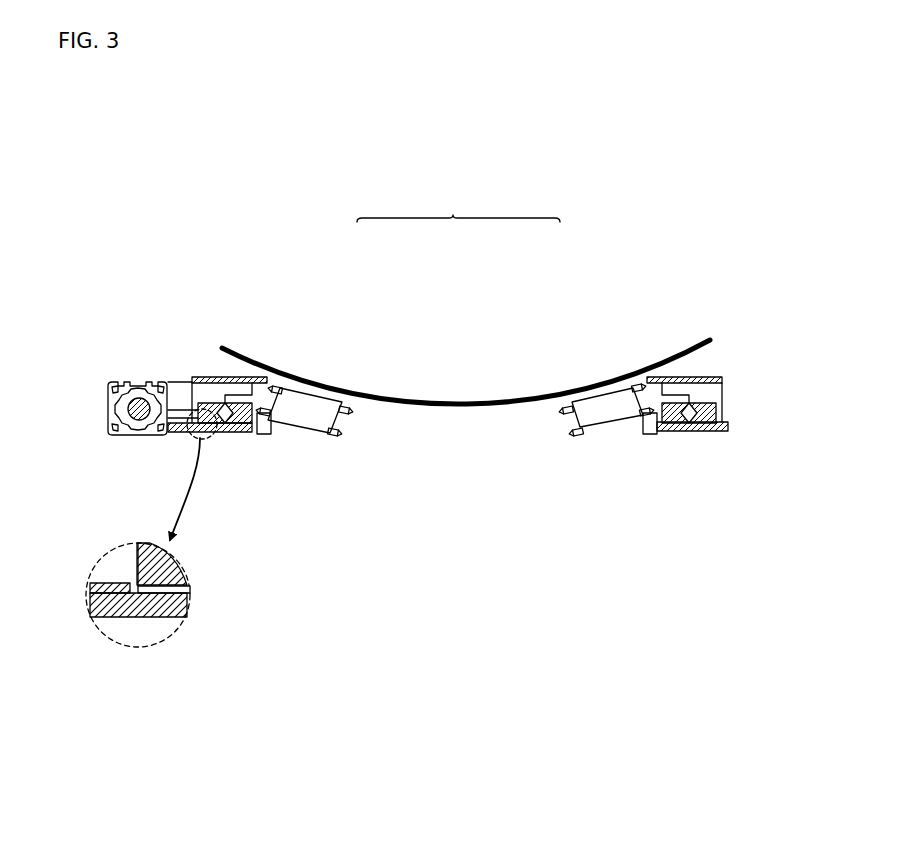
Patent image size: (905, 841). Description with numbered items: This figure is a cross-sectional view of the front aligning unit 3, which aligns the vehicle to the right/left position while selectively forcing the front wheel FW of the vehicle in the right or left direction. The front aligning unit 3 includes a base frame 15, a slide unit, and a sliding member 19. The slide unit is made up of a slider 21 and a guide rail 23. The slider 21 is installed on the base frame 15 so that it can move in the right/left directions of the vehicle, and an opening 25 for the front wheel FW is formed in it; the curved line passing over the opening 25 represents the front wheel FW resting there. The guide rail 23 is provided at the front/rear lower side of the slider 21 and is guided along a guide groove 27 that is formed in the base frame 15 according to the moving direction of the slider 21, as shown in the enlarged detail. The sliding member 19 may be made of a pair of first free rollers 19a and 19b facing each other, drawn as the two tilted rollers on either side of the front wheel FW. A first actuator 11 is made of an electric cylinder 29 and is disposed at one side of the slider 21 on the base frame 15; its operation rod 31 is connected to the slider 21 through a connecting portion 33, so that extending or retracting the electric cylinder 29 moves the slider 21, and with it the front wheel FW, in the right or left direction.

The front aligning unit 3 is at (730, 303).
The first actuator 11 is at (107, 375).
The base frame 15 is at (248, 433).
The sliding member 19 is at (458, 205).
The first free roller 19a is at (318, 402).
The first free roller 19b is at (597, 398).
The slider 21 is at (205, 378).
The guide rail 23 is at (212, 433).
The opening 25 is at (403, 437).
The guide groove 27 is at (137, 613).
The electric cylinder 29 is at (108, 410).
The operation rod 31 is at (135, 400).
The connecting portion 33 is at (180, 390).
The front wheel FW is at (455, 408).